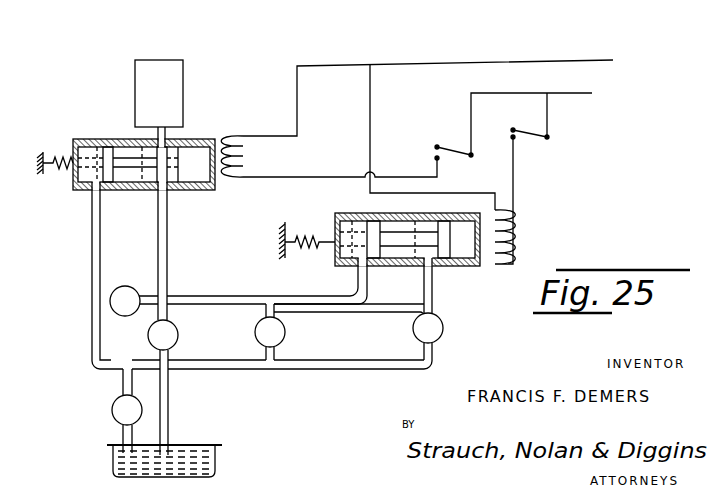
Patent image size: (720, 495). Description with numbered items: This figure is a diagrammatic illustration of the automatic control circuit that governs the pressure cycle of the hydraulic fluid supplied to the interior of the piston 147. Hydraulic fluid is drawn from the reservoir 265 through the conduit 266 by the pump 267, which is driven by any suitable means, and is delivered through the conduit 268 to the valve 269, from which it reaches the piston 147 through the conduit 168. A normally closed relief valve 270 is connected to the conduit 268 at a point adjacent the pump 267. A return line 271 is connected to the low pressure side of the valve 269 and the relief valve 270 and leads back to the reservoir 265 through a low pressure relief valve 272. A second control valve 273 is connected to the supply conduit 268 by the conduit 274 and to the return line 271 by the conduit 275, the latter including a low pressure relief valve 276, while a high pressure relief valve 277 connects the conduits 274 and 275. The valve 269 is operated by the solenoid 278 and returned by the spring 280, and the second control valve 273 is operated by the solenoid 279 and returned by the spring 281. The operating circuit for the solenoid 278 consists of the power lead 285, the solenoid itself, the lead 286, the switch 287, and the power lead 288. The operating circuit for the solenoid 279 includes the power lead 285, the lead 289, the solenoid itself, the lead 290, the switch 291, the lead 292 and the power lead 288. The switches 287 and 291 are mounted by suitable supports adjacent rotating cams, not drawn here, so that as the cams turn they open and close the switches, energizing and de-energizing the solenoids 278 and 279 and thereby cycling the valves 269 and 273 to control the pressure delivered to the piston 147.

The piston 147 is at (183, 81).
The conduit 168 is at (131, 133).
The valve 269 is at (201, 139).
The spring 280 is at (62, 155).
The solenoid 278 is at (243, 153).
The power lead 285 is at (456, 63).
The lead 289 is at (372, 111).
The lead 286 is at (313, 177).
The switch 287 is at (456, 150).
The power lead 288 is at (506, 84).
The lead 292 is at (547, 108).
The switch 291 is at (547, 139).
The lead 290 is at (513, 173).
The solenoid 279 is at (510, 222).
The second control valve 273 is at (465, 266).
The spring 281 is at (300, 240).
The return line 271 is at (92, 256).
The conduit 268 is at (167, 250).
The conduit 274 is at (238, 296).
The relief valve 270 is at (125, 286).
The pump 267 is at (178, 335).
The high pressure relief valve 277 is at (285, 332).
The low pressure relief valve 276 is at (440, 318).
The conduit 275 is at (345, 369).
The low pressure relief valve 272 is at (112, 411).
The conduit 266 is at (168, 395).
The reservoir 265 is at (222, 452).